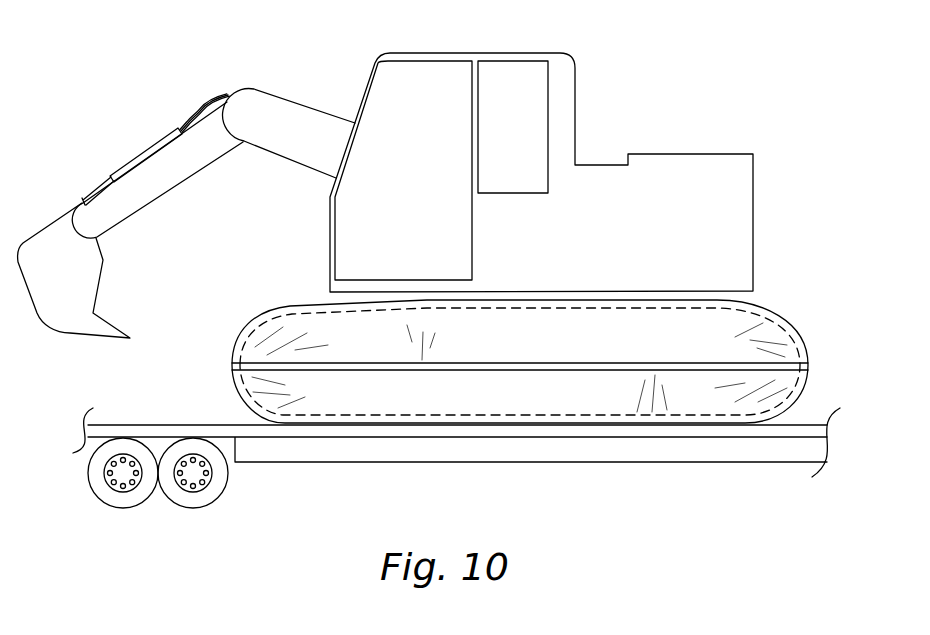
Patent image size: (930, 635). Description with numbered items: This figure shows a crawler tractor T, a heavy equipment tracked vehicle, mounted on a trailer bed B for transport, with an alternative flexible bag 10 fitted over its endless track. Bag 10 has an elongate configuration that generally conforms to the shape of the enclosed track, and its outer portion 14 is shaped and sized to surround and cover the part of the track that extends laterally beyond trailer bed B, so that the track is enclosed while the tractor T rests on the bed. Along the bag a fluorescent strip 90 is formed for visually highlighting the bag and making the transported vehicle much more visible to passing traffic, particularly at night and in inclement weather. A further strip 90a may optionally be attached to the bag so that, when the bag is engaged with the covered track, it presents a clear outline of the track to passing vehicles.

The flexible bag 10 is at (813, 350).
The outer portion 14 is at (770, 313).
The fluorescent strip 90 is at (637, 364).
The strip 90a is at (560, 416).
The crawler tractor T is at (705, 153).
The trailer bed B is at (275, 452).